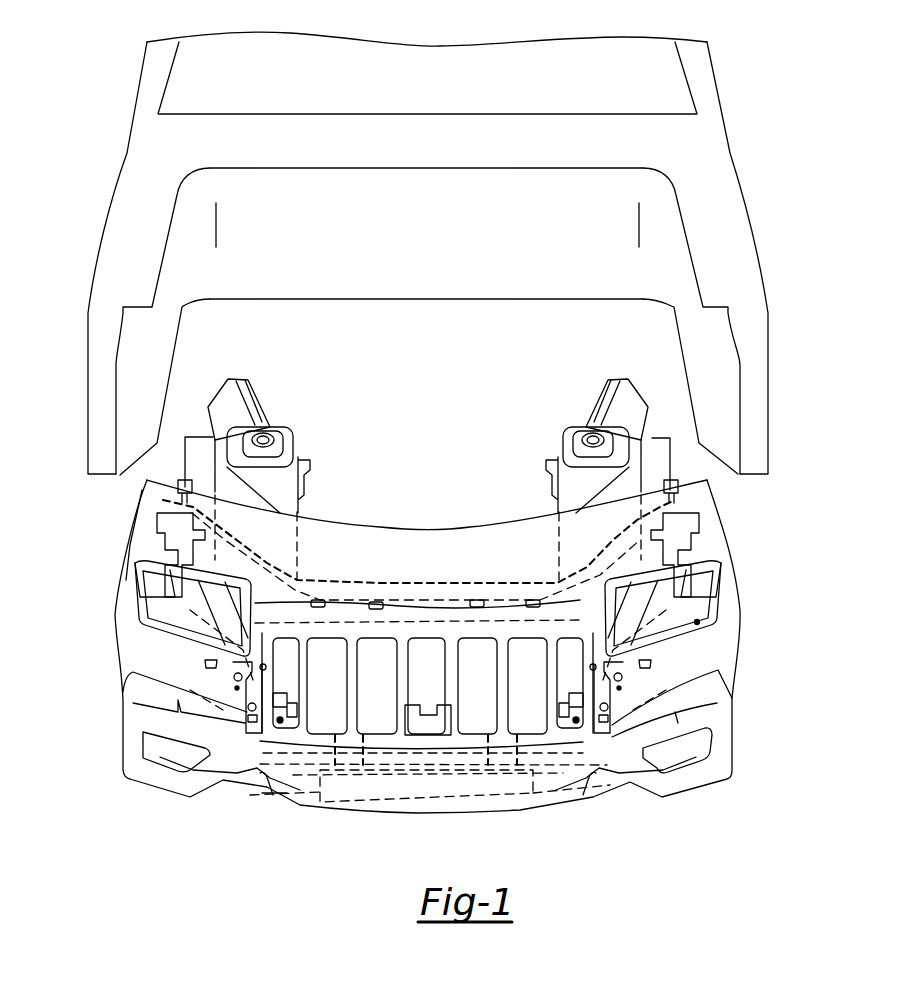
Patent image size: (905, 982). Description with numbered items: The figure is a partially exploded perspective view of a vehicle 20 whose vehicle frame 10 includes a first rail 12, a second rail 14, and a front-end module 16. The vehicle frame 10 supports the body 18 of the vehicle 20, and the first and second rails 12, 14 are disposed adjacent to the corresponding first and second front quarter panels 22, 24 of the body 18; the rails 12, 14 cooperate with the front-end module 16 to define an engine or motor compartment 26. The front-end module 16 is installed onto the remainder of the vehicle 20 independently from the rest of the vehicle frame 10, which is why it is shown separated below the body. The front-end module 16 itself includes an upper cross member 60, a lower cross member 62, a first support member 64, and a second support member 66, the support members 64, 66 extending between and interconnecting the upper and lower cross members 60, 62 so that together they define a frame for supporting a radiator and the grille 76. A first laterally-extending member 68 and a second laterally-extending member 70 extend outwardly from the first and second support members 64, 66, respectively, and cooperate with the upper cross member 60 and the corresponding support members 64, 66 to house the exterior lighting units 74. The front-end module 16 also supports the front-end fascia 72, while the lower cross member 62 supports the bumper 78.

The vehicle frame 10 is at (114, 505).
The first rail 12 is at (262, 397).
The second rail 14 is at (591, 402).
The front-end module 16 is at (570, 808).
The body 18 is at (759, 232).
The vehicle 20 is at (724, 112).
The first front quarter panel 22 is at (88, 395).
The second front quarter panel 24 is at (768, 378).
The engine or motor compartment 26 is at (408, 382).
The upper cross member 60 is at (392, 582).
The lower cross member 62 is at (303, 793).
The first support member 64 is at (233, 720).
The second support member 66 is at (612, 733).
The first laterally-extending member 68 is at (157, 622).
The second laterally-extending member 70 is at (741, 608).
The front-end fascia 72 is at (742, 643).
The exterior lighting units 74 is at (152, 605).
The grille 76 is at (410, 673).
The bumper 78 is at (273, 797).